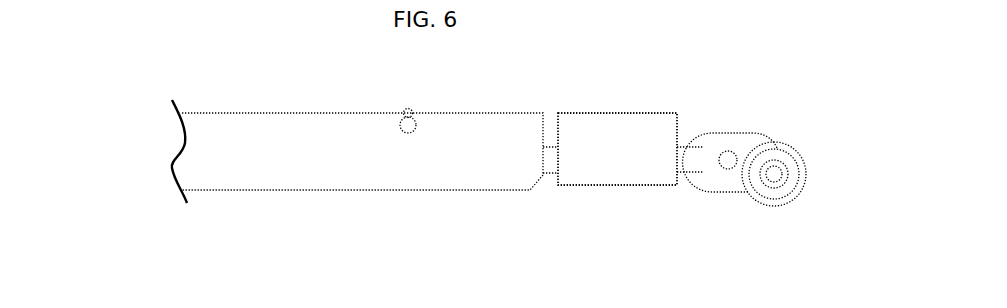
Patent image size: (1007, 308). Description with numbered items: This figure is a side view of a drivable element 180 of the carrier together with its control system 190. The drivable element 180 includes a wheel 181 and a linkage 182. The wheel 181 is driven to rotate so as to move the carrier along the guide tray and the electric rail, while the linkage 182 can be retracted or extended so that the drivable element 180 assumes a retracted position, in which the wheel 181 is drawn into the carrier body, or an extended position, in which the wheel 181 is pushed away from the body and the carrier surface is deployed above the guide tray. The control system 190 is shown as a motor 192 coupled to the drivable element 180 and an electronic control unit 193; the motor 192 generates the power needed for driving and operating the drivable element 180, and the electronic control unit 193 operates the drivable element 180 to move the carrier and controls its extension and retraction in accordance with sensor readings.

The drivable element 180 is at (768, 142).
The wheel 181 is at (800, 178).
The linkage 182 is at (692, 158).
The control system 190 is at (475, 179).
The motor 192 is at (277, 140).
The electronic control unit (ECU) 193 is at (592, 135).